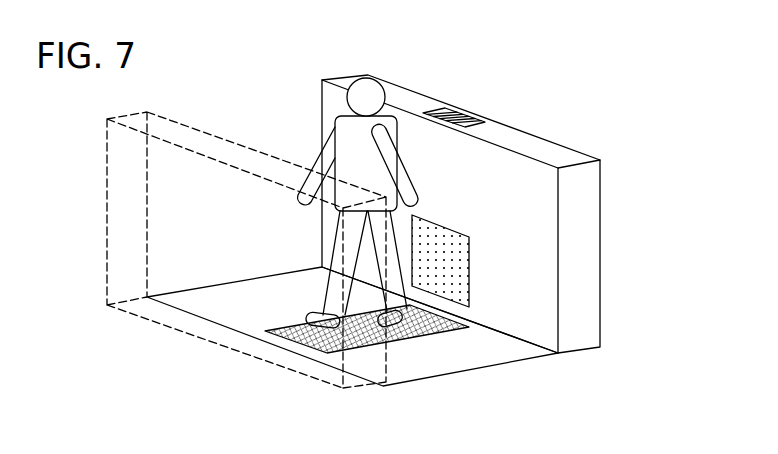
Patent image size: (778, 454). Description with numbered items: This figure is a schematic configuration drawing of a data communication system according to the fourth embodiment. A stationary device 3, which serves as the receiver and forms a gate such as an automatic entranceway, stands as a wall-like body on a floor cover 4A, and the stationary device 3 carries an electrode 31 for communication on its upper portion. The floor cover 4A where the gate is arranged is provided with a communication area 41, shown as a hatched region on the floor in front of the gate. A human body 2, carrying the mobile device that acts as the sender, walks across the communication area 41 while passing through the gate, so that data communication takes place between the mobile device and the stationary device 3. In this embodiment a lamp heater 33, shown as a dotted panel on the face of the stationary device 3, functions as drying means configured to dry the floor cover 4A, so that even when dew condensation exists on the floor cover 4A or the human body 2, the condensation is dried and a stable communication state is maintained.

The human body 2 is at (372, 80).
The stationary device 3 is at (540, 144).
The electrode 31 is at (450, 107).
The lamp heater 33 is at (480, 233).
The communication area 41 is at (290, 337).
The floor cover 4A is at (477, 375).